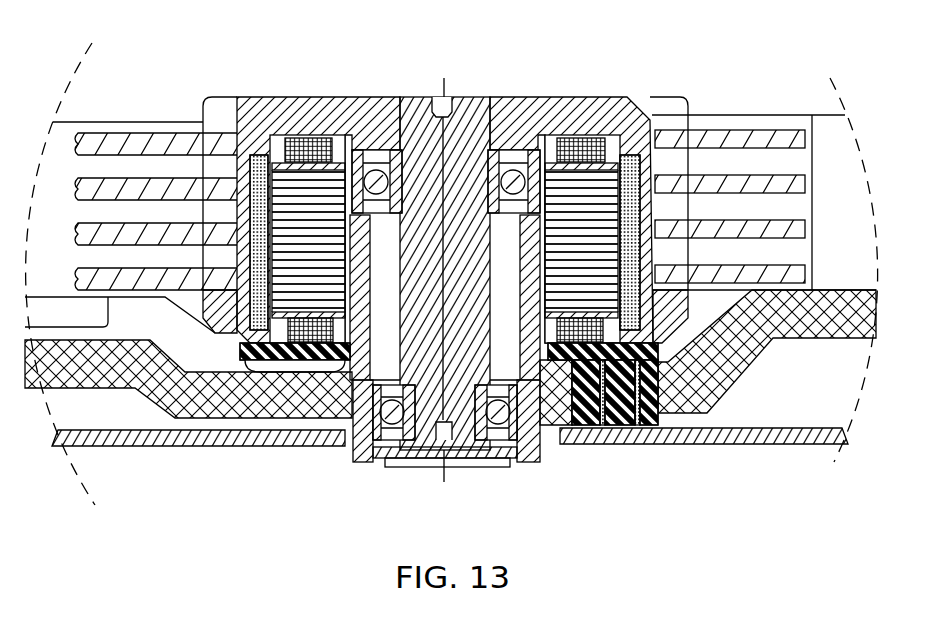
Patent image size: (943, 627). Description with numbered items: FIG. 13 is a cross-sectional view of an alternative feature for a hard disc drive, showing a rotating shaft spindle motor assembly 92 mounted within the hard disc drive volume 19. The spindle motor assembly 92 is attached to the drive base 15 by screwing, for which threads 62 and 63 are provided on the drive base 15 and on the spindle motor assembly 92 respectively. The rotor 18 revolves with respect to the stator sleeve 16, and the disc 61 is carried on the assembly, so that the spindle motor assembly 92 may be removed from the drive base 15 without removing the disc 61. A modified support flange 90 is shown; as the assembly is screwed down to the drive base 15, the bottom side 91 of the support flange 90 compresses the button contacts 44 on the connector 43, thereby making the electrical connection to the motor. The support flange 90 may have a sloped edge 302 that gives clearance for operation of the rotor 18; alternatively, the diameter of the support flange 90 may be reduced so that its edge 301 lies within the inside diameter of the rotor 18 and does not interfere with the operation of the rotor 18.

The rotor 18 is at (366, 99).
The spindle motor assembly 92 is at (509, 96).
The disc 61 is at (136, 132).
The hard disc drive volume 19 is at (760, 202).
The stator sleeve 16 is at (364, 294).
The threads 63 is at (352, 466).
The threads 62 is at (546, 466).
The support flange 90 is at (243, 353).
The sloped edge 302 is at (215, 347).
The bottom side 91 is at (270, 362).
The drive base 15 is at (810, 336).
The edge 301 is at (668, 342).
The connector 43 is at (592, 443).
The button contacts 44 is at (620, 443).